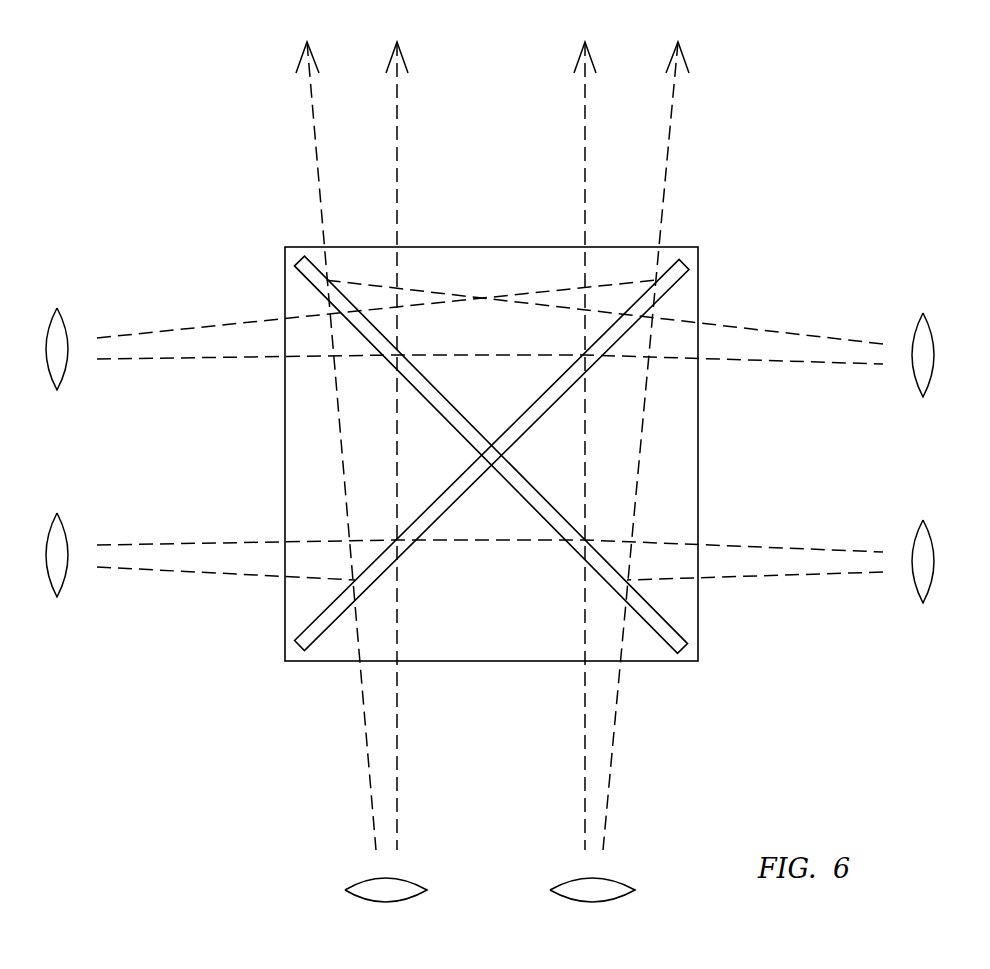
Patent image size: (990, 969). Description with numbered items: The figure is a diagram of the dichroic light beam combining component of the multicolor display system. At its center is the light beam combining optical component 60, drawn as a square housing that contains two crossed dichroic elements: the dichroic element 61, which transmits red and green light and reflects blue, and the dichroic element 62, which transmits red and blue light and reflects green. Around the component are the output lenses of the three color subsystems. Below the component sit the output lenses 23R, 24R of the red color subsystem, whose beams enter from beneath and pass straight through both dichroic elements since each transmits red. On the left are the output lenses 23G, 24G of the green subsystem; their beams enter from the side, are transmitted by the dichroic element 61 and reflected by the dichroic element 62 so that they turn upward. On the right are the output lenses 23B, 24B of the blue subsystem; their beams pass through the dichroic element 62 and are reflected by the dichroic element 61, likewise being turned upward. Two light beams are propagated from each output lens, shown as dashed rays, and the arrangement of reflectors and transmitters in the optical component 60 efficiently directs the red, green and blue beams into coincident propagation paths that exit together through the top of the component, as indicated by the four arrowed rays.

The light beam combining optical component 60 is at (698, 269).
The dichroic element 61 is at (665, 618).
The dichroic element 62 is at (438, 517).
The output lens 23G is at (62, 322).
The output lens 24G is at (62, 534).
The output lens 23B is at (929, 326).
The output lens 24B is at (929, 534).
The output lens 23R is at (357, 896).
The output lens 24R is at (623, 896).